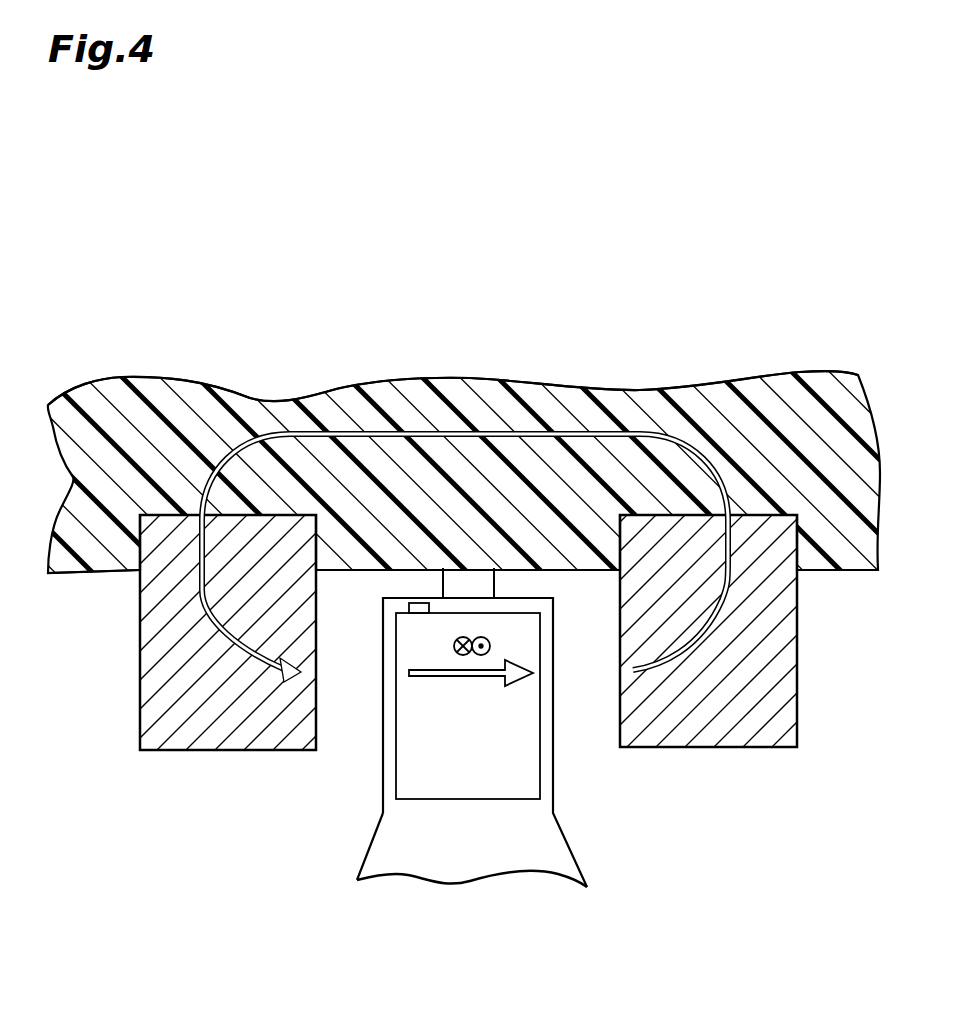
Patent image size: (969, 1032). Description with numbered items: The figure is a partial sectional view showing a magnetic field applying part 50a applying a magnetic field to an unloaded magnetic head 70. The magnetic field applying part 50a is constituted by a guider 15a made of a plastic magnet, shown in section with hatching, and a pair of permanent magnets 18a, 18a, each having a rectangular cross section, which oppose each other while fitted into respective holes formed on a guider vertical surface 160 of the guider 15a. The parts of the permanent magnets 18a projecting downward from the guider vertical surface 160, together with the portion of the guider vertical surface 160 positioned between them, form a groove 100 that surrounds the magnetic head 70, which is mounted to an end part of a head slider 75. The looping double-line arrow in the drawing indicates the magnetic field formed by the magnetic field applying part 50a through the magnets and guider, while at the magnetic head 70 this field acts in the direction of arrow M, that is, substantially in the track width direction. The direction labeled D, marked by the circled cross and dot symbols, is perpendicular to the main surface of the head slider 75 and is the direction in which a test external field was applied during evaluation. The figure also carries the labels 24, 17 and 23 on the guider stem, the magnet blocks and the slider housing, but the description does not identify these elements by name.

The magnetic field applying part 50a is at (812, 355).
The guider 15a is at (735, 412).
The guider vertical surface 160 is at (88, 575).
The support stem 24 is at (465, 585).
The blocks 17 is at (190, 752).
The permanent magnets 18a is at (250, 737).
The groove 100 is at (323, 667).
The housing 23 is at (478, 853).
The head slider 75 is at (530, 768).
The magnetic head 70 is at (409, 604).
The direction D is at (490, 640).
The arrow M is at (455, 675).